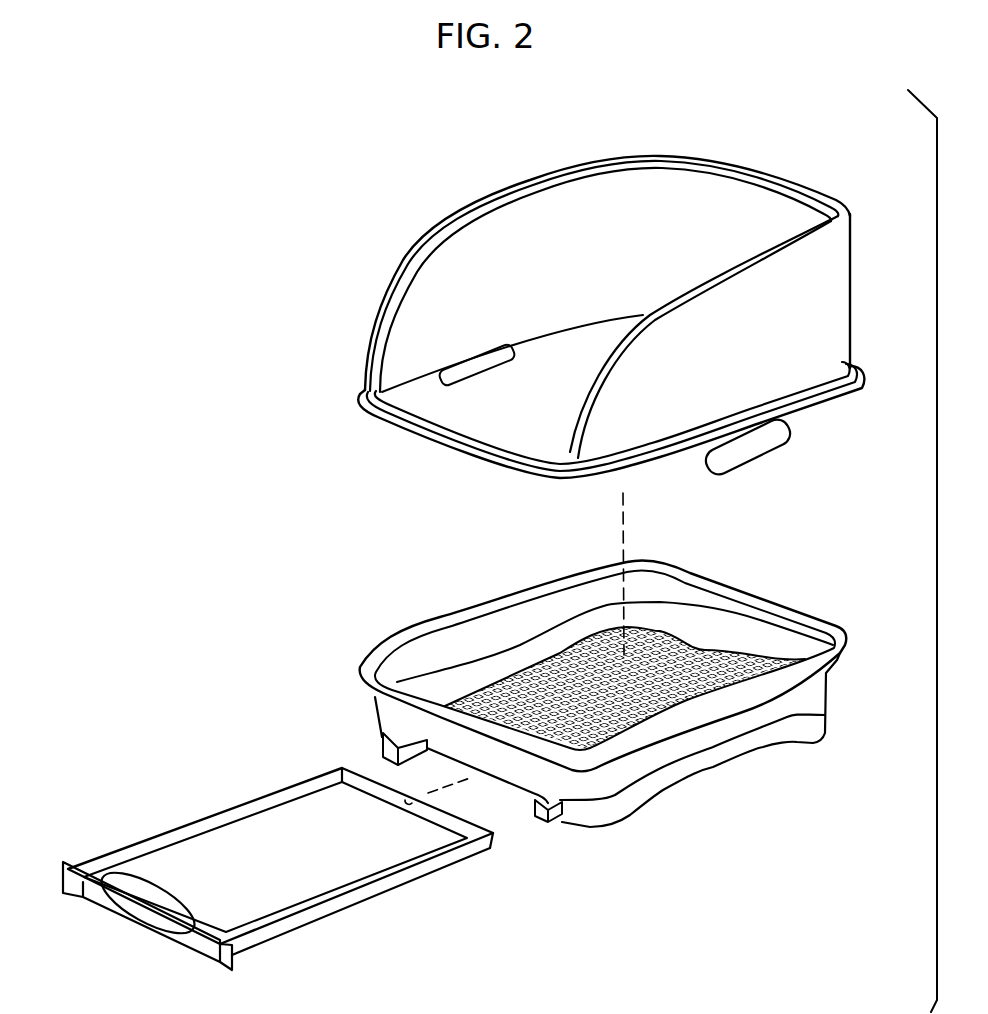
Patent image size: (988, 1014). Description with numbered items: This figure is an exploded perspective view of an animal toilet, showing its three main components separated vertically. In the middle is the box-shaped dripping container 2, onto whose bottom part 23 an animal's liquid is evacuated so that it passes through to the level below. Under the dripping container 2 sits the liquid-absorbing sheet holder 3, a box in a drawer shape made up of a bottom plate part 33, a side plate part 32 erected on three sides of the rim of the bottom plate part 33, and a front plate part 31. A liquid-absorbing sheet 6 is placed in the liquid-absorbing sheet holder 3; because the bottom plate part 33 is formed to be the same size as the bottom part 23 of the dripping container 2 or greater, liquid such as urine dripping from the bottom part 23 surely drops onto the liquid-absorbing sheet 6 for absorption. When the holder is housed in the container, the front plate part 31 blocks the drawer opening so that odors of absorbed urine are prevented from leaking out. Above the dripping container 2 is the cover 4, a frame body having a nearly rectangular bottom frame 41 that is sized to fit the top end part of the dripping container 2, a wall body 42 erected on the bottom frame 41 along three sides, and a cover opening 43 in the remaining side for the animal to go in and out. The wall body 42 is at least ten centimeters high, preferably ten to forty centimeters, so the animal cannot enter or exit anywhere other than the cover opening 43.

The dripping container 2 is at (632, 685).
The bottom part 23 is at (687, 660).
The liquid-absorbing sheet holder 3 is at (278, 871).
The front plate part 31 is at (192, 938).
The side plate part 32 is at (318, 913).
The bottom plate part 33 is at (368, 903).
The cover 4 is at (603, 334).
The bottom frame 41 is at (467, 443).
The wall body 42 is at (793, 353).
The cover opening 43 is at (437, 293).
The liquid-absorbing sheet 6 is at (257, 827).